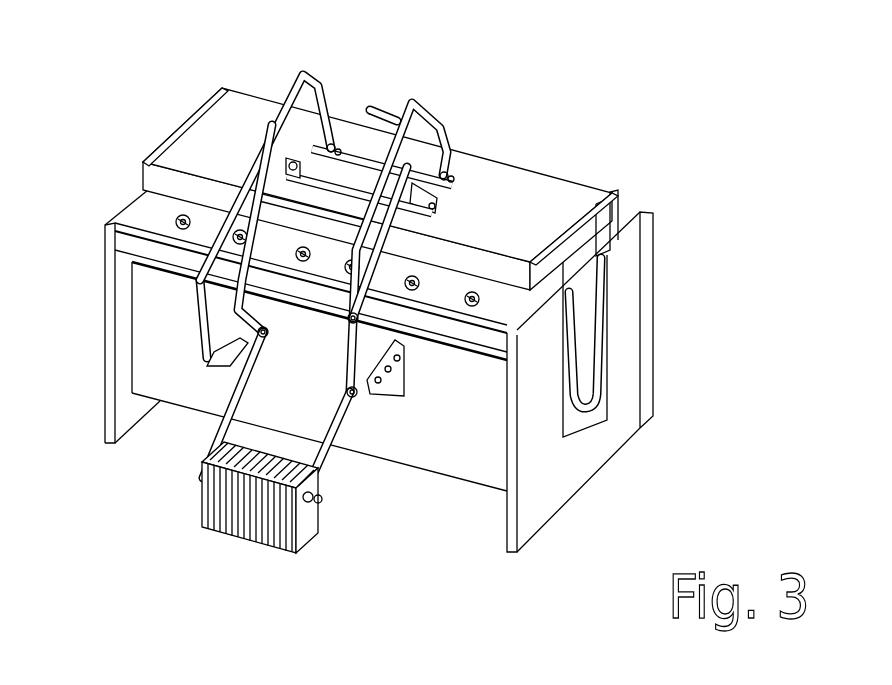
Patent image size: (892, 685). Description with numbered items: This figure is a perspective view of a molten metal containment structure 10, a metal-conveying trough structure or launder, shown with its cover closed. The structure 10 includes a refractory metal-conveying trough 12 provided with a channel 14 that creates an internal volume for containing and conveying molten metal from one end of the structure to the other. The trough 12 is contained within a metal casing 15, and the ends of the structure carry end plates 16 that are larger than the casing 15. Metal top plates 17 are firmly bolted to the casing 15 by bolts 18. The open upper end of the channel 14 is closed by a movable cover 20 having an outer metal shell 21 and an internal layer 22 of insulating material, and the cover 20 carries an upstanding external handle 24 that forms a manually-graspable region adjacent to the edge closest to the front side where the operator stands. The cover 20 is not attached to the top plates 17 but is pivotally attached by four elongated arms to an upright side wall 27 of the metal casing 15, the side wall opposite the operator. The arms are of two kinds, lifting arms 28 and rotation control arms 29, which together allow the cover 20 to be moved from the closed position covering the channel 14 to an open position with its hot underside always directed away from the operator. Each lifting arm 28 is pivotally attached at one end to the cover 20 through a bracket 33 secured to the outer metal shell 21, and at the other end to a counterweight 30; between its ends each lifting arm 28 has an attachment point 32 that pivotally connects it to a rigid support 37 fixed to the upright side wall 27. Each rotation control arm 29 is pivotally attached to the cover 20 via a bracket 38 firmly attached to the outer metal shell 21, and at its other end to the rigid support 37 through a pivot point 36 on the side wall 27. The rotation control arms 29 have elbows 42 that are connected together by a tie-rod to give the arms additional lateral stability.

The molten metal containment structure 10 is at (622, 86).
The metal-conveying trough 12 is at (580, 422).
The channel 14 is at (582, 304).
The metal casing 15 is at (494, 480).
The end plates 16 is at (632, 415).
The metal top plates 17 is at (138, 213).
The bolts 18 is at (259, 206).
The movable cover 20 is at (478, 182).
The outer metal shell 21 is at (523, 218).
The internal layer of insulating material 22 is at (618, 210).
The upstanding external handle 24 is at (372, 108).
The upright side wall 27 is at (467, 440).
The lifting arms 28 is at (312, 78).
The rotation control arms 29 is at (253, 143).
The counterweight 30 is at (303, 528).
The attachment point 32 is at (263, 337).
The bracket 33 is at (352, 145).
The pivot point 36 is at (218, 361).
The rigid support 37 is at (248, 343).
The bracket 38 is at (326, 186).
The elbows 42 is at (200, 291).